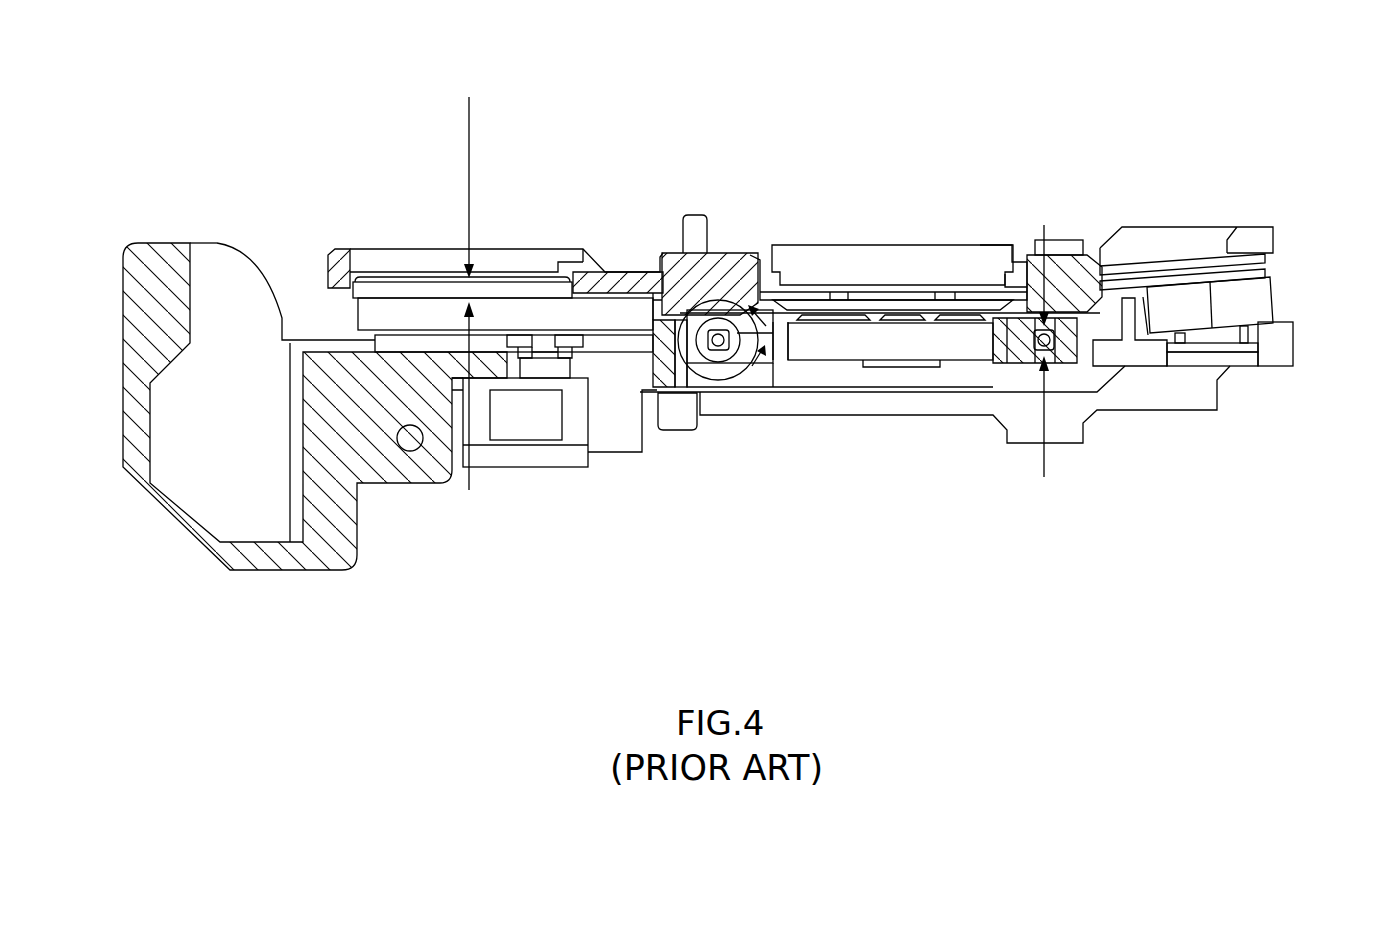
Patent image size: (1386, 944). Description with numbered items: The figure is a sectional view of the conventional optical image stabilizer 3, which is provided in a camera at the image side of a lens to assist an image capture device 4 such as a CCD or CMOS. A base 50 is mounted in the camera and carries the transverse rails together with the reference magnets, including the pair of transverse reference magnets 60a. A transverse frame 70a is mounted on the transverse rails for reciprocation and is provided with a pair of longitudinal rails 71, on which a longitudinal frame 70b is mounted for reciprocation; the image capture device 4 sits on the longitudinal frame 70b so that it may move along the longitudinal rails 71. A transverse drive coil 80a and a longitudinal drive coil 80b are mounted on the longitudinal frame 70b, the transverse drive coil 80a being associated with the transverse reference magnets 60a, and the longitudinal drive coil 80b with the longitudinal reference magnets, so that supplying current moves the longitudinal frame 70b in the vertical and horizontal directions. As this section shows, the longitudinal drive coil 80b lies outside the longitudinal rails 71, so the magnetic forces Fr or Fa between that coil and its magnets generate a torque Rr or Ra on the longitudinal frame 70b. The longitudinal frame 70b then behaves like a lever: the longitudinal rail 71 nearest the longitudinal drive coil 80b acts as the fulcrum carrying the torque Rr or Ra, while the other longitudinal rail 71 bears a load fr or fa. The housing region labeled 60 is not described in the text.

The optical image stabilizer 3 is at (999, 623).
The image capture device 4 is at (890, 245).
The base 50 is at (953, 418).
The housing 60 is at (275, 260).
The transverse reference magnets 60a is at (1273, 293).
The transverse frame 70a is at (853, 352).
The longitudinal frame 70b is at (728, 277).
The longitudinal rails 71 is at (723, 350).
The transverse drive coil 80a is at (1188, 272).
The longitudinal drive coil 80b is at (540, 262).